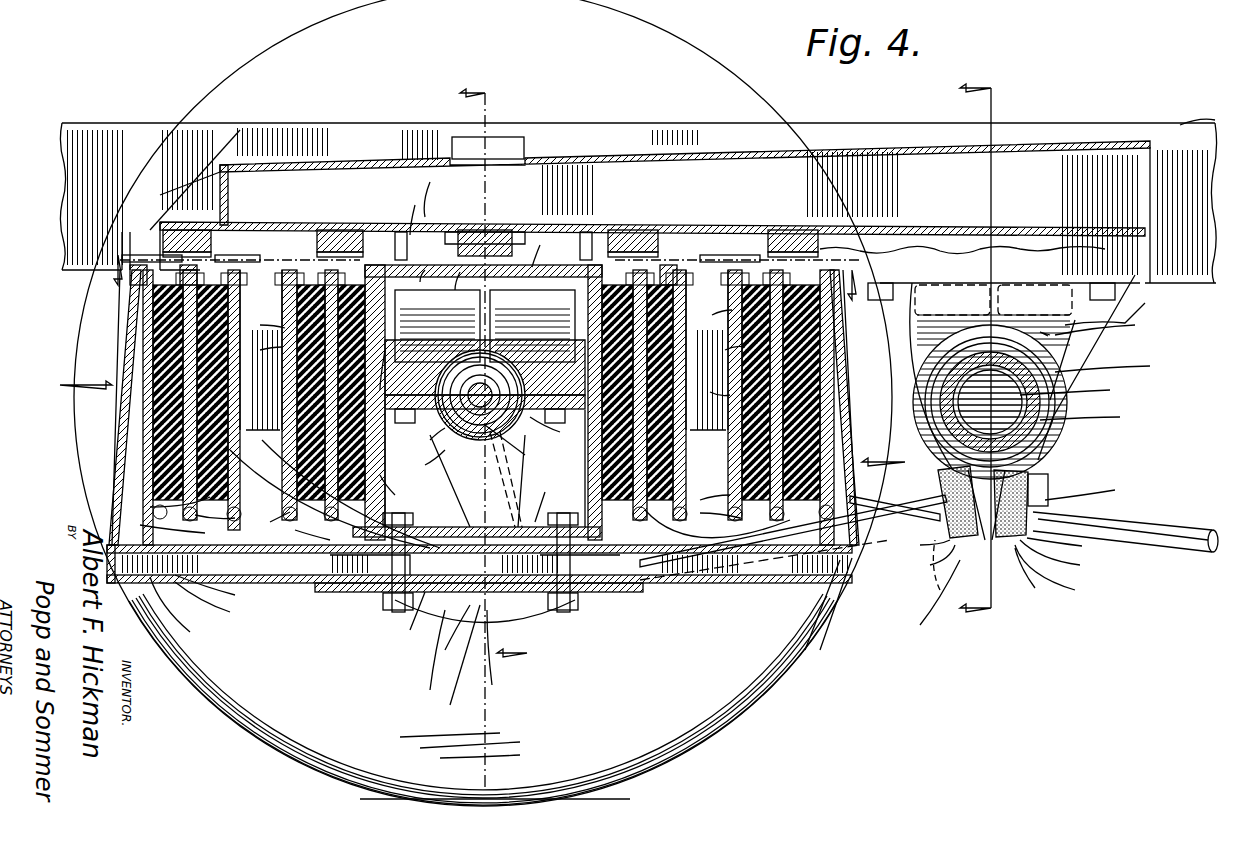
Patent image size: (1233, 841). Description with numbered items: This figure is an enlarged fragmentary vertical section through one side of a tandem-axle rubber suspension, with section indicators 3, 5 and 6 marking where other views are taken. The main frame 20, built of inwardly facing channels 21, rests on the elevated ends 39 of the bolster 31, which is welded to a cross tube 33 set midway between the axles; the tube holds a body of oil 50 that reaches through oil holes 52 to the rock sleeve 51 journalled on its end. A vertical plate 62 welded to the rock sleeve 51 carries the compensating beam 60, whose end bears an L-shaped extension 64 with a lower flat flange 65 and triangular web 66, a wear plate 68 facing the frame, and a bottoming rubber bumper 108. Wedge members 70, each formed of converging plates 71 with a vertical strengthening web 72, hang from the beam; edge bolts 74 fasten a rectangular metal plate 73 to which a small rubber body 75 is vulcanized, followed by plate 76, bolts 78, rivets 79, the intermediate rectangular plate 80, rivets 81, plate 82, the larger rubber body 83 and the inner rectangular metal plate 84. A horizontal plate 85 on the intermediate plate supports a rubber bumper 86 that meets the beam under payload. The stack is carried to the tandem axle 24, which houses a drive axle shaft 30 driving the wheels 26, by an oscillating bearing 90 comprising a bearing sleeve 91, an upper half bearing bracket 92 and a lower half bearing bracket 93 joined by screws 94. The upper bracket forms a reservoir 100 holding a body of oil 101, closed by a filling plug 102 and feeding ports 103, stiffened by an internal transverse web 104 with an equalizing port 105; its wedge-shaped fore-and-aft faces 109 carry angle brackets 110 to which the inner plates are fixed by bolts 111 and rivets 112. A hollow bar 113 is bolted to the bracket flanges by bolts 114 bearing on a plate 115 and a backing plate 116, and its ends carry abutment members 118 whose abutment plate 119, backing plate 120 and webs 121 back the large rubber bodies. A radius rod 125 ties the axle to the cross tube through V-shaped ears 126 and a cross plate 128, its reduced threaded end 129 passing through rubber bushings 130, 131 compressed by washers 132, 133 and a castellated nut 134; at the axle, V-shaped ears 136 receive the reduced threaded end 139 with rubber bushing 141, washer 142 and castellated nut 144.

The main frame 20 is at (1171, 94).
The inwardly facing channels 21 is at (1205, 115).
The tandem axle 24 is at (554, 429).
The wheels 26 is at (265, 722).
The drive axle shafts 30 is at (463, 438).
The bolster 31 is at (1145, 318).
The cross tube 33 is at (1044, 402).
The elevated ends 39 is at (1110, 300).
The body of oil 50 is at (1035, 397).
The rock sleeve 51 is at (1048, 402).
The oil holes 52 is at (1039, 402).
The compensating beam 60 is at (885, 127).
The vertical plate 62 is at (1040, 234).
The L-shaped extension 64 is at (222, 168).
The lower flat flange 65 is at (160, 205).
The triangular web 66 is at (190, 182).
The wear plate 68 is at (520, 135).
The wedge members 70 is at (266, 220).
The plates 71 is at (262, 246).
The vertical strengthening web 72 is at (270, 298).
The rectangular metal plate 73 is at (497, 351).
The edge bolts 74 is at (235, 268).
The rubber body 75 is at (491, 321).
The rectangular metal plate 76 is at (215, 470).
The bolts 78 is at (180, 264).
The rivets 79 is at (191, 501).
The intermediate rectangular plate 80 is at (435, 465).
The rivets 81 is at (467, 516).
The rectangular metal plate 82 is at (232, 557).
The rubber body 83 is at (482, 535).
The inner rectangular metal plate 84 is at (440, 543).
The horizontal plate 85 is at (185, 232).
The rubber bumper 86 is at (180, 255).
The oscillating bearings 90 is at (421, 463).
The bearing sleeve 91 is at (470, 467).
The upper half bearing bracket 92 is at (391, 404).
The lower half bearing bracket 93 is at (517, 444).
The screws 94 is at (425, 437).
The reservoir 100 is at (545, 287).
The body of oil 101 is at (429, 269).
The filling plug 102 is at (427, 211).
The ports 103 is at (437, 326).
The internal transverse web 104 is at (457, 274).
The equalizing port 105 is at (532, 326).
The bottoming rubber bumper 108 is at (470, 230).
The fore-and-aft faces 109 is at (493, 218).
The angle bracket 110 is at (328, 590).
The bolts 111 is at (375, 228).
The rivets 112 is at (394, 489).
The bar 113 is at (725, 592).
The bolts 114 is at (400, 615).
The plate 115 is at (445, 527).
The backing plate 116 is at (340, 594).
The abutment member 118 is at (478, 423).
The abutment plate 119 is at (138, 409).
The backing plate 120 is at (122, 368).
The webs 121 is at (135, 433).
The radius rods 125 is at (1160, 505).
The V-shaped ears 126 is at (980, 540).
The cross plate 128 is at (790, 552).
The reduced threaded end 129 is at (1040, 482).
The rubber bushing 130 is at (999, 591).
The rubber bushing 131 is at (1042, 576).
The washer 132 is at (1002, 558).
The washer 133 is at (1002, 544).
The castellated nut 134 is at (1094, 489).
The V-shaped ears 136 is at (485, 647).
The reduced threaded end 139 is at (408, 616).
The rubber bushing 141 is at (452, 661).
The washer 142 is at (483, 587).
The castellated nut 144 is at (443, 634).
The section line 3 is at (978, 355).
The section line 5 is at (486, 266).
The section line 6 is at (502, 437).